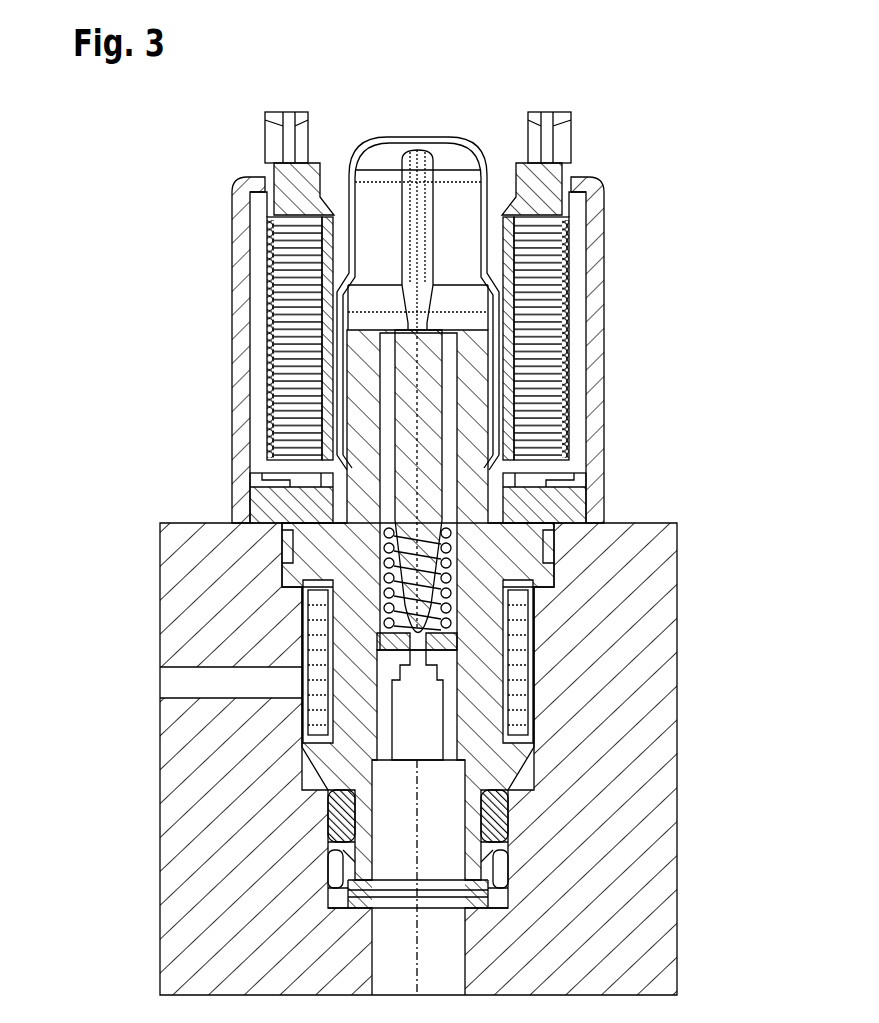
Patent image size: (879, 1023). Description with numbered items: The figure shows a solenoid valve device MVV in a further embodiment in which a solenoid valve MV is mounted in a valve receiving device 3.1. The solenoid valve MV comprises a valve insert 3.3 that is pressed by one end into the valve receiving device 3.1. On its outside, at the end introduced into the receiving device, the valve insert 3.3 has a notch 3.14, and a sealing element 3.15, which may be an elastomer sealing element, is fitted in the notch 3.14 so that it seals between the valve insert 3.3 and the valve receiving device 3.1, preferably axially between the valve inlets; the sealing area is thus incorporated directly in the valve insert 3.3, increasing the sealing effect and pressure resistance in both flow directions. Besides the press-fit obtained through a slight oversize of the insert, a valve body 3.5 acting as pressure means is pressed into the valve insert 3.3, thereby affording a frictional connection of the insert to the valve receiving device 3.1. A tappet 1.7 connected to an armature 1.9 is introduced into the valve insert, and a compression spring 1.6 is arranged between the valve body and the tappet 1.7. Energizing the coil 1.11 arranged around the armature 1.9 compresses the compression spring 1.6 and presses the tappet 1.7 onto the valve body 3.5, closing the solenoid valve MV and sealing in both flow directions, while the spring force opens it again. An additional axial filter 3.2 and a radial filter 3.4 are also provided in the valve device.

The solenoid valve MV is at (413, 88).
The solenoid valve device MVV is at (675, 378).
The compression spring 1.6 is at (383, 583).
The tappet 1.7 is at (410, 497).
The armature 1.9 is at (460, 258).
The coil 1.11 is at (290, 254).
The valve receiving device 3.1 is at (640, 963).
The axial filter 3.2 is at (328, 872).
The valve insert 3.3 is at (475, 733).
The radial filter 3.4 is at (318, 683).
The valve body 3.5 is at (505, 655).
The notch 3.14 is at (508, 843).
The sealing element 3.15 is at (508, 815).